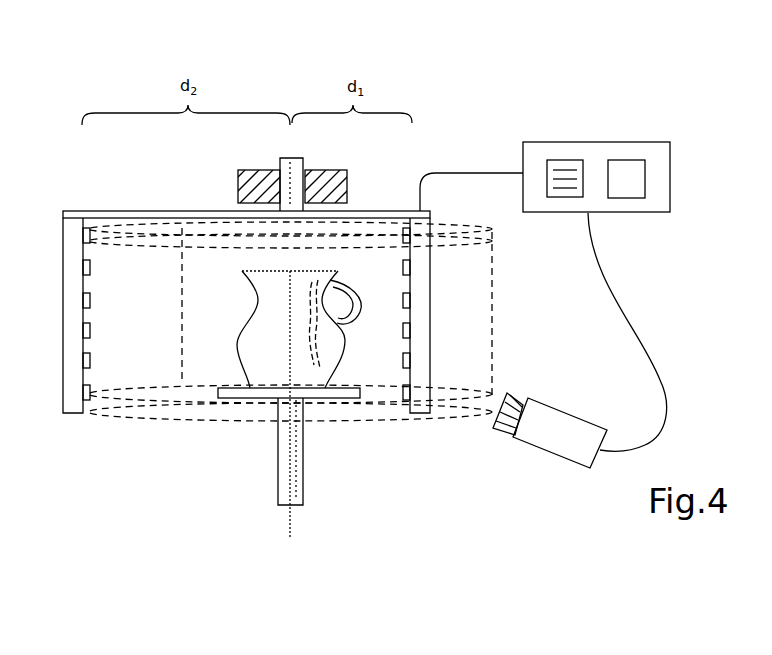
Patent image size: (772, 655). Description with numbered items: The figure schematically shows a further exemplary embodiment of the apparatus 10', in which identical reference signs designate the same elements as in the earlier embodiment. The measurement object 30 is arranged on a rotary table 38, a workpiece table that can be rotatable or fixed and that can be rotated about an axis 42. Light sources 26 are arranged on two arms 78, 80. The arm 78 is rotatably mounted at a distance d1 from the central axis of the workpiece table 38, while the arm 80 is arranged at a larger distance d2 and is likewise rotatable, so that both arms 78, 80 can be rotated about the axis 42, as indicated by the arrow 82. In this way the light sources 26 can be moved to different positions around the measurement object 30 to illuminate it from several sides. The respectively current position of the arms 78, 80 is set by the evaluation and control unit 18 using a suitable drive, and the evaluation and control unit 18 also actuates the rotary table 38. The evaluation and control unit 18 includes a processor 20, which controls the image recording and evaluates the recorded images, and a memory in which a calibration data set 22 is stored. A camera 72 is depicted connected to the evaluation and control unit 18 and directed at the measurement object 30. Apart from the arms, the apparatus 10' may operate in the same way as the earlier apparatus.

The apparatus 10' is at (366, 214).
The evaluation and control unit 18 is at (595, 141).
The processor 20 is at (627, 200).
The calibration data set 22 is at (570, 213).
The light sources 26 is at (88, 328).
The measurement object 30 is at (262, 345).
The rotary table 38 is at (336, 397).
The axis 42 is at (293, 523).
The camera 72 is at (560, 452).
The arm 78 is at (430, 400).
The arm 80 is at (72, 316).
The arrow 82 is at (290, 159).